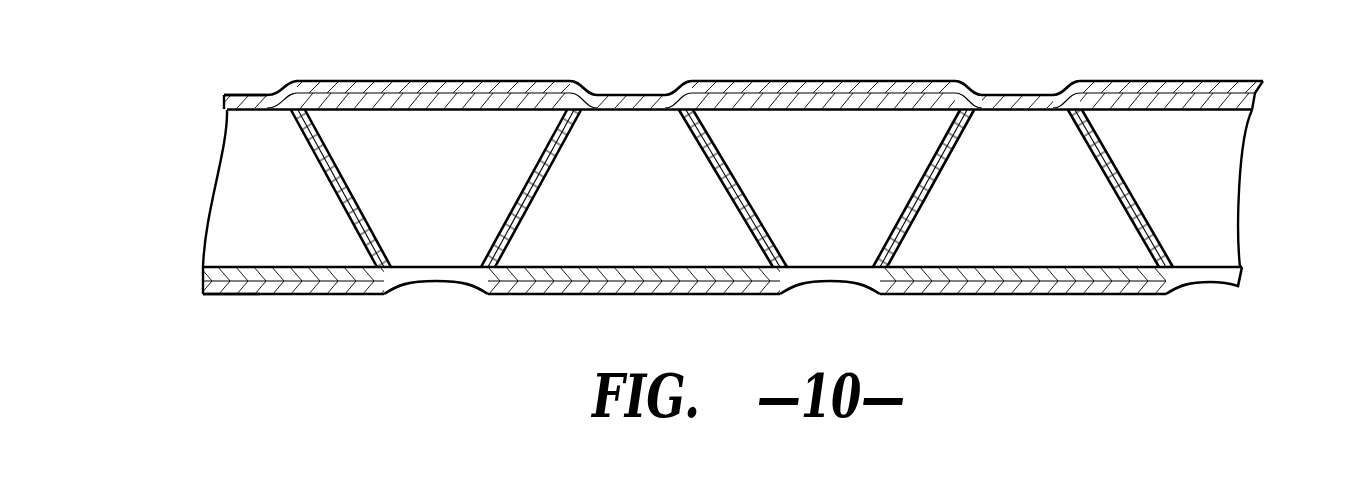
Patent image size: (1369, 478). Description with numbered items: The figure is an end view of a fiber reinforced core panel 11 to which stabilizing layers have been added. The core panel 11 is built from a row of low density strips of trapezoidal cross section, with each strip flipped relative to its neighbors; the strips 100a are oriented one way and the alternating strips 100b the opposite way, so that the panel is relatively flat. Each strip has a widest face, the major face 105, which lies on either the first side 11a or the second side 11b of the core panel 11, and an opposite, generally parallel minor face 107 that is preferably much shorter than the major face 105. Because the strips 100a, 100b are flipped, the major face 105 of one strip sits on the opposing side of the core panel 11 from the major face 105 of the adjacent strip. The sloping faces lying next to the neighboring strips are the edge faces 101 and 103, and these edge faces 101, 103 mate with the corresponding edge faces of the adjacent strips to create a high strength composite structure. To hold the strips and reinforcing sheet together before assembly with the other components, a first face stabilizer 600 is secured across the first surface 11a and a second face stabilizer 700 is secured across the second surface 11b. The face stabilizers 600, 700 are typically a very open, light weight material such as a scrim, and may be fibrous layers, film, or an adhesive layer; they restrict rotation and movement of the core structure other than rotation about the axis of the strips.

The fiber reinforced core panel 11 is at (143, 110).
The first side of the core panel 11a is at (188, 280).
The second side of the core panel 11b is at (188, 97).
The low density strip 100a is at (660, 216).
The low density strip 100b is at (462, 202).
The edge face 101 is at (542, 148).
The edge face 103 is at (570, 155).
The major face 105 is at (805, 110).
The minor face 107 is at (630, 108).
The first face stabilizer 600 is at (1240, 290).
The second face stabilizer 700 is at (1232, 82).